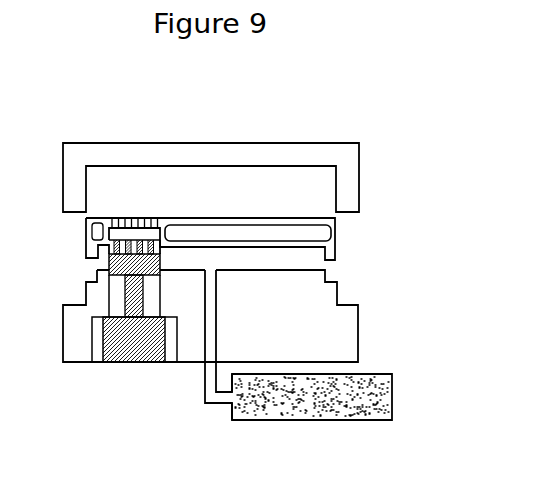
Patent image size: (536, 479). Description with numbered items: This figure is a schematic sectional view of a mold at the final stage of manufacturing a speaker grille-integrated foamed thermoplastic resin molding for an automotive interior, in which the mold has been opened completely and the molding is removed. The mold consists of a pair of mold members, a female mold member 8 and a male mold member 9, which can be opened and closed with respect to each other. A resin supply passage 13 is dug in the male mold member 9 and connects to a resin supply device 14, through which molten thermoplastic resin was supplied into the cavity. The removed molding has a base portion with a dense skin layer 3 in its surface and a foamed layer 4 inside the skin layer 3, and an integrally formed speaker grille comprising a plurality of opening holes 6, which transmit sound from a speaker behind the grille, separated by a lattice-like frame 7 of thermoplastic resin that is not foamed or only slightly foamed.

The skin layer 3 is at (305, 247).
The foamed layer 4 is at (318, 235).
The opening holes 6 is at (118, 217).
The lattice-like frame 7 is at (133, 217).
The female mold member 8 is at (353, 201).
The male mold member 9 is at (348, 345).
The resin supply passage 13 is at (216, 339).
The resin supply device 14 is at (363, 390).